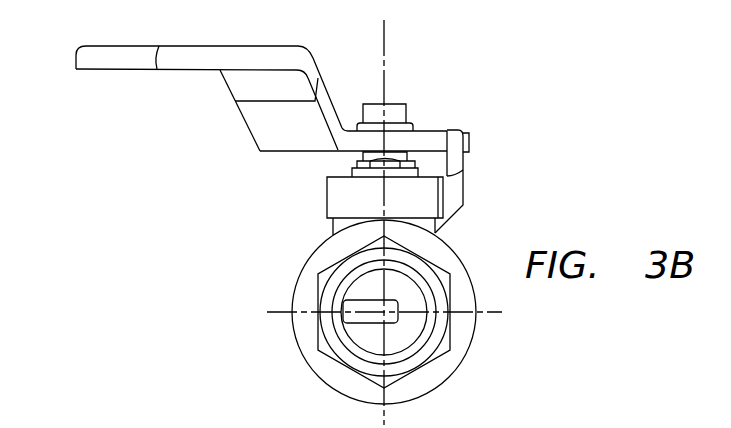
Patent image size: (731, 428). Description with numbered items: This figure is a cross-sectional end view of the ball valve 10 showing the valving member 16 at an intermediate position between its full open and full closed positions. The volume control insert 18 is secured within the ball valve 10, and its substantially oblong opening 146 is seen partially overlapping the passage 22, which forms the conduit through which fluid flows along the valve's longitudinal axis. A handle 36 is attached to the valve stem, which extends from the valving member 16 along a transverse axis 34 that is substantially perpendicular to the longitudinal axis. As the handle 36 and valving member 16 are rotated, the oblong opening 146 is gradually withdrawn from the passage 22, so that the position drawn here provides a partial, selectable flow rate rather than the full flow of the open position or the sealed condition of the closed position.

The ball valve 10 is at (470, 230).
The valving member 16 is at (435, 332).
The volume control insert 18 is at (362, 338).
The passage 22 is at (395, 340).
The transverse axis 34 is at (386, 58).
The handle 36 is at (113, 72).
The oblong opening 146 is at (357, 318).